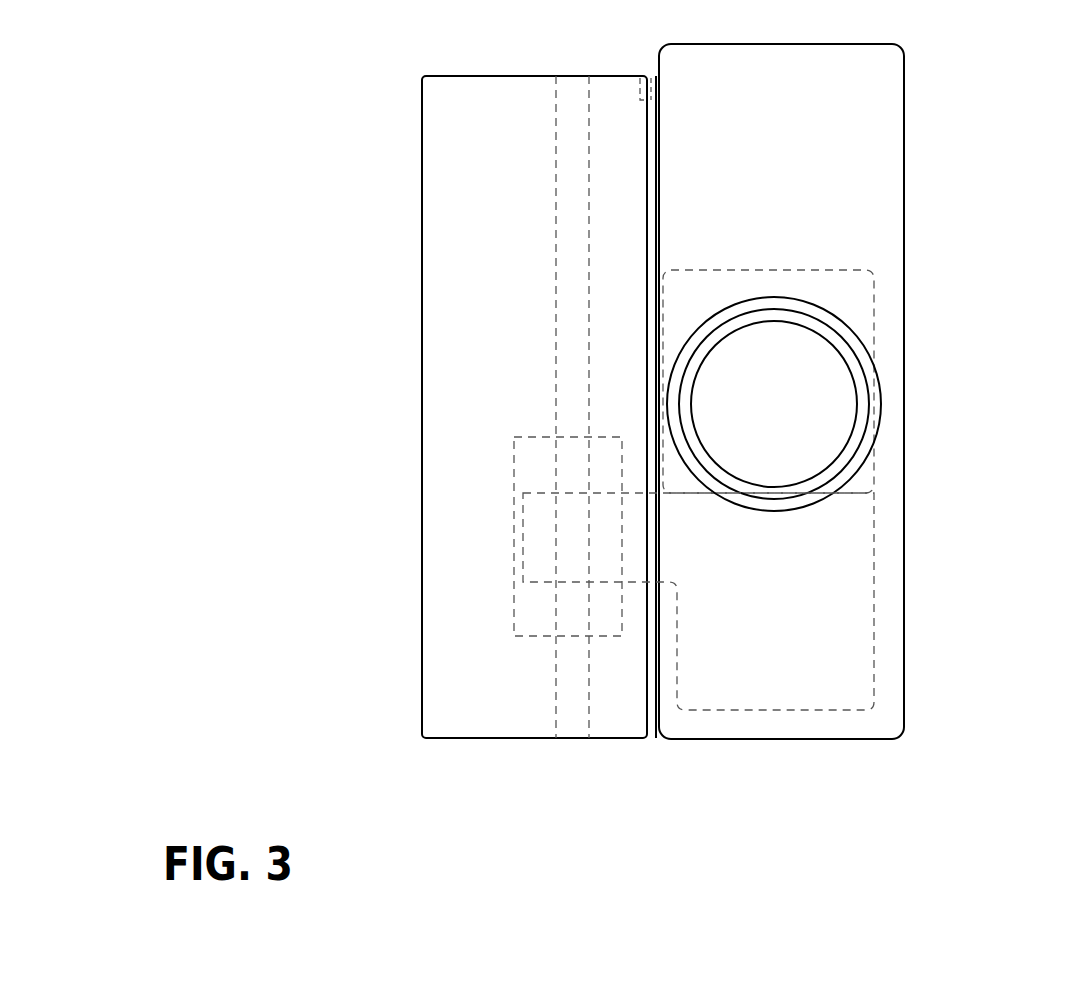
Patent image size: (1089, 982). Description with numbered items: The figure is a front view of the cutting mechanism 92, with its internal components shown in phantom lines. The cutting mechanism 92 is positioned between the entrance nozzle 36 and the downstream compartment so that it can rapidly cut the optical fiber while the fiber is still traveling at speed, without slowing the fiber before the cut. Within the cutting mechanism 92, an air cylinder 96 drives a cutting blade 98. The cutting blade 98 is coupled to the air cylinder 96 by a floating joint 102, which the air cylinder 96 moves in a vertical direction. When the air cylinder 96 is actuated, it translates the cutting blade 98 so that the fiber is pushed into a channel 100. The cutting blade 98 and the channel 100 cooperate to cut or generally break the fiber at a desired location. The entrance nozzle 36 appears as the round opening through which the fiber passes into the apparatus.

The cutting mechanism 92 is at (338, 138).
The air cylinder 96 is at (563, 329).
The channel 100 is at (797, 282).
The entrance nozzle 36 is at (857, 408).
The cutting blade 98 is at (810, 645).
The floating joint 102 is at (525, 620).